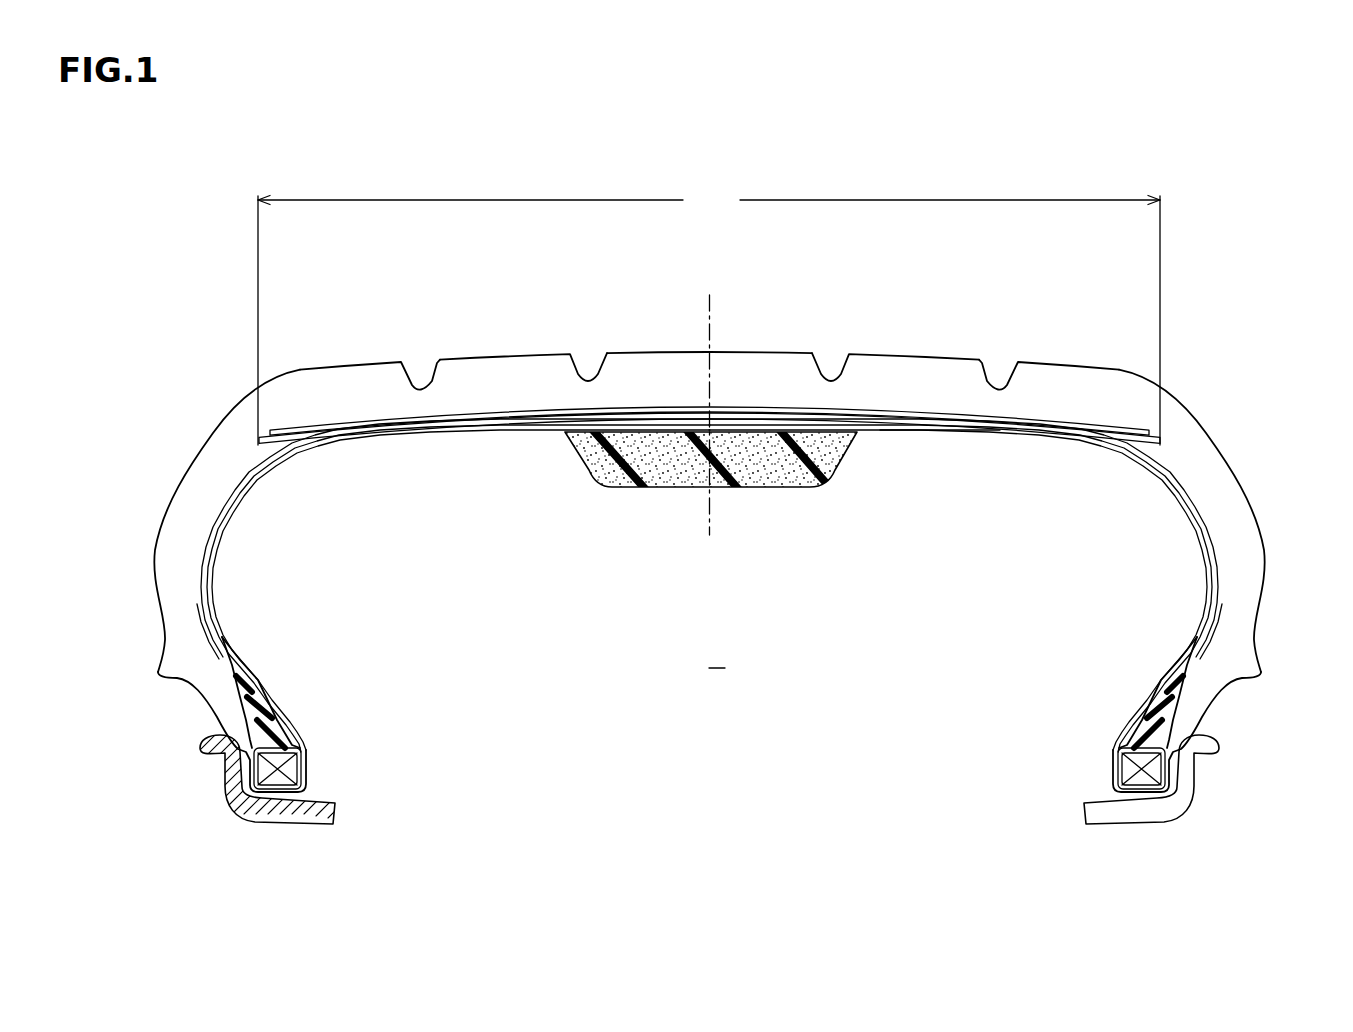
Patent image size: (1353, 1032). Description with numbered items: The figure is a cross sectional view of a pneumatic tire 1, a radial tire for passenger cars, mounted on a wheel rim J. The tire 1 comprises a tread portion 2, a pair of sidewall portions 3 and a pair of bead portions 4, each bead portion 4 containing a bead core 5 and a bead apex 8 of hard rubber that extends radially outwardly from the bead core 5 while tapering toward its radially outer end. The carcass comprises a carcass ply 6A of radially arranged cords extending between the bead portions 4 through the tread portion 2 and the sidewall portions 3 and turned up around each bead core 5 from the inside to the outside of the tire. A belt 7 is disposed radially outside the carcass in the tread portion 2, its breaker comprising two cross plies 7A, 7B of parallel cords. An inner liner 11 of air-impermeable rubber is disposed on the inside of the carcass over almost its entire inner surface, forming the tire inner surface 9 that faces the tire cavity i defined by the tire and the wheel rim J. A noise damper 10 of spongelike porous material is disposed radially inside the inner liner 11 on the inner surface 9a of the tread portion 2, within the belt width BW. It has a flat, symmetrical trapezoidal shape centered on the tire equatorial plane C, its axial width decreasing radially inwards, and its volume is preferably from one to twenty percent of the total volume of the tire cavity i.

The pneumatic tire 1 is at (965, 312).
The tread portion 2 is at (790, 330).
The sidewall portions 3 is at (150, 540).
The bead portions 4 is at (232, 762).
The bead core 5 is at (285, 772).
The carcass ply 6A is at (1212, 540).
The belt (breaker) 7 is at (709, 498).
The breaker cross ply 7A is at (430, 440).
The breaker cross ply 7B is at (455, 436).
The bead apex 8 is at (272, 722).
The tire inner surface 9 is at (1193, 617).
The inner surface of the tread portion 9a is at (955, 434).
The noise damper 10 is at (778, 492).
The inner liner 11 is at (1158, 473).
The rim J is at (300, 828).
The belt width BW is at (709, 316).
The tire equatorial plane C is at (710, 402).
The tire cavity i is at (717, 657).